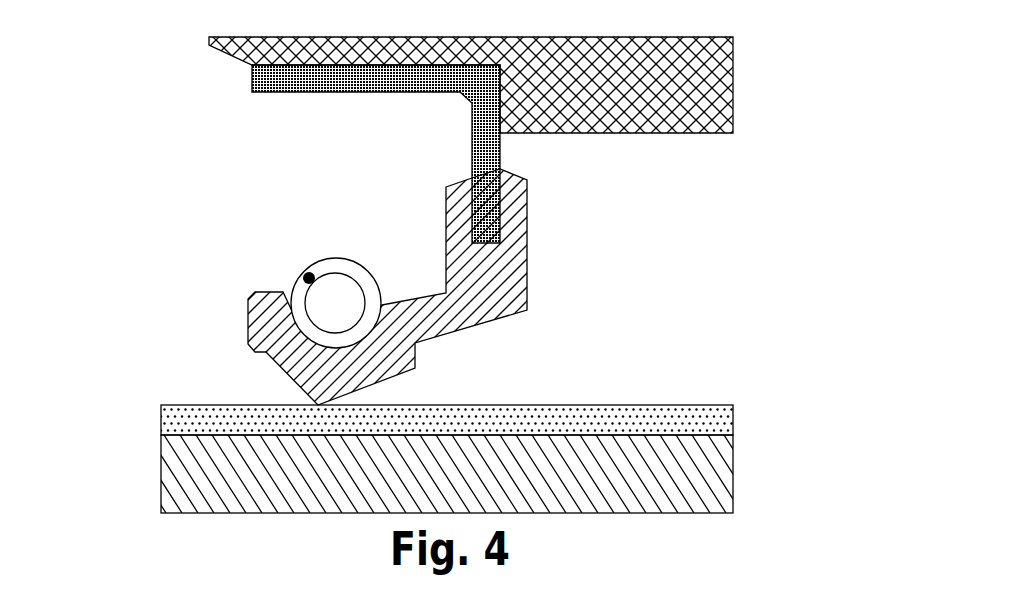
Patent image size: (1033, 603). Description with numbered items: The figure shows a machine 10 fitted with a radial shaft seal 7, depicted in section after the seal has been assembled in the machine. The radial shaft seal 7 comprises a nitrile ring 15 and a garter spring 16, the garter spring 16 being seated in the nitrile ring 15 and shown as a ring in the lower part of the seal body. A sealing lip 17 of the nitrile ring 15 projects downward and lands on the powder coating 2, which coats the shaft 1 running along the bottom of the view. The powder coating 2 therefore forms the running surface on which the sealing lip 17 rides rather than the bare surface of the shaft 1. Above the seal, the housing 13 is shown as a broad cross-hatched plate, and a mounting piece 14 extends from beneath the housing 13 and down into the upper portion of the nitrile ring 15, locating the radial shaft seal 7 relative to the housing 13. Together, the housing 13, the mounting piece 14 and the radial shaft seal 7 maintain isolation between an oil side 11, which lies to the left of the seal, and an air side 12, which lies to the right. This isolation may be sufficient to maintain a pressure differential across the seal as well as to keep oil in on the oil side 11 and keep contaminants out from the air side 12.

The shaft 1 is at (722, 490).
The powder coating 2 is at (725, 417).
The radial shaft seal 7 is at (440, 290).
The machine 10 is at (187, 58).
The oil side 11 is at (276, 190).
The air side 12 is at (646, 243).
The housing 13 is at (733, 90).
The mounting piece 14 is at (488, 162).
The nitrile ring 15 is at (507, 293).
The garter spring 16 is at (370, 318).
The sealing lip 17 is at (320, 387).